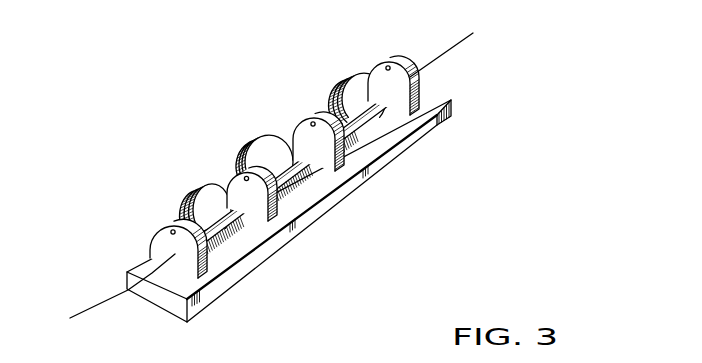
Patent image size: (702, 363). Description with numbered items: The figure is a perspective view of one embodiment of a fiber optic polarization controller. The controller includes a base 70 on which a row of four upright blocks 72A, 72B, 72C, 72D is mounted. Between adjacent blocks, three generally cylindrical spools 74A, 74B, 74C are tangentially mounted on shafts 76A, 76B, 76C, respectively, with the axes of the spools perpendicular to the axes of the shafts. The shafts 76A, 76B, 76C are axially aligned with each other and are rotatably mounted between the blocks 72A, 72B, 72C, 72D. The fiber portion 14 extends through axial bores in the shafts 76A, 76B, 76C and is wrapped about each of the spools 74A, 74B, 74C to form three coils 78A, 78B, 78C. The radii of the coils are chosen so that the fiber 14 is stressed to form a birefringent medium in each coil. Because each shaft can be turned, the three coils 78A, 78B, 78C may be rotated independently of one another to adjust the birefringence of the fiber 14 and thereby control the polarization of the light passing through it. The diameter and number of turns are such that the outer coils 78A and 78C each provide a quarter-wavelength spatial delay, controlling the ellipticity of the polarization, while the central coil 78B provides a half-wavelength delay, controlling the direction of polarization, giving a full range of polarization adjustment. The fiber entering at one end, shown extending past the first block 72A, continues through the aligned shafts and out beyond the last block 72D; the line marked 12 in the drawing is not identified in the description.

The wire 12 is at (447, 52).
The fiber portion 14 is at (102, 303).
The base 70 is at (320, 214).
The upright block 72A is at (160, 243).
The upright block 72B is at (267, 223).
The upright block 72C is at (300, 127).
The upright block 72D is at (397, 60).
The spool 74A is at (207, 203).
The spool 74B is at (268, 143).
The spool 74C is at (360, 107).
The shaft 76A is at (242, 207).
The shaft 76B is at (313, 167).
The shaft 76C is at (388, 95).
The coil 78A is at (188, 203).
The coil 78B is at (240, 157).
The coil 78C is at (337, 87).